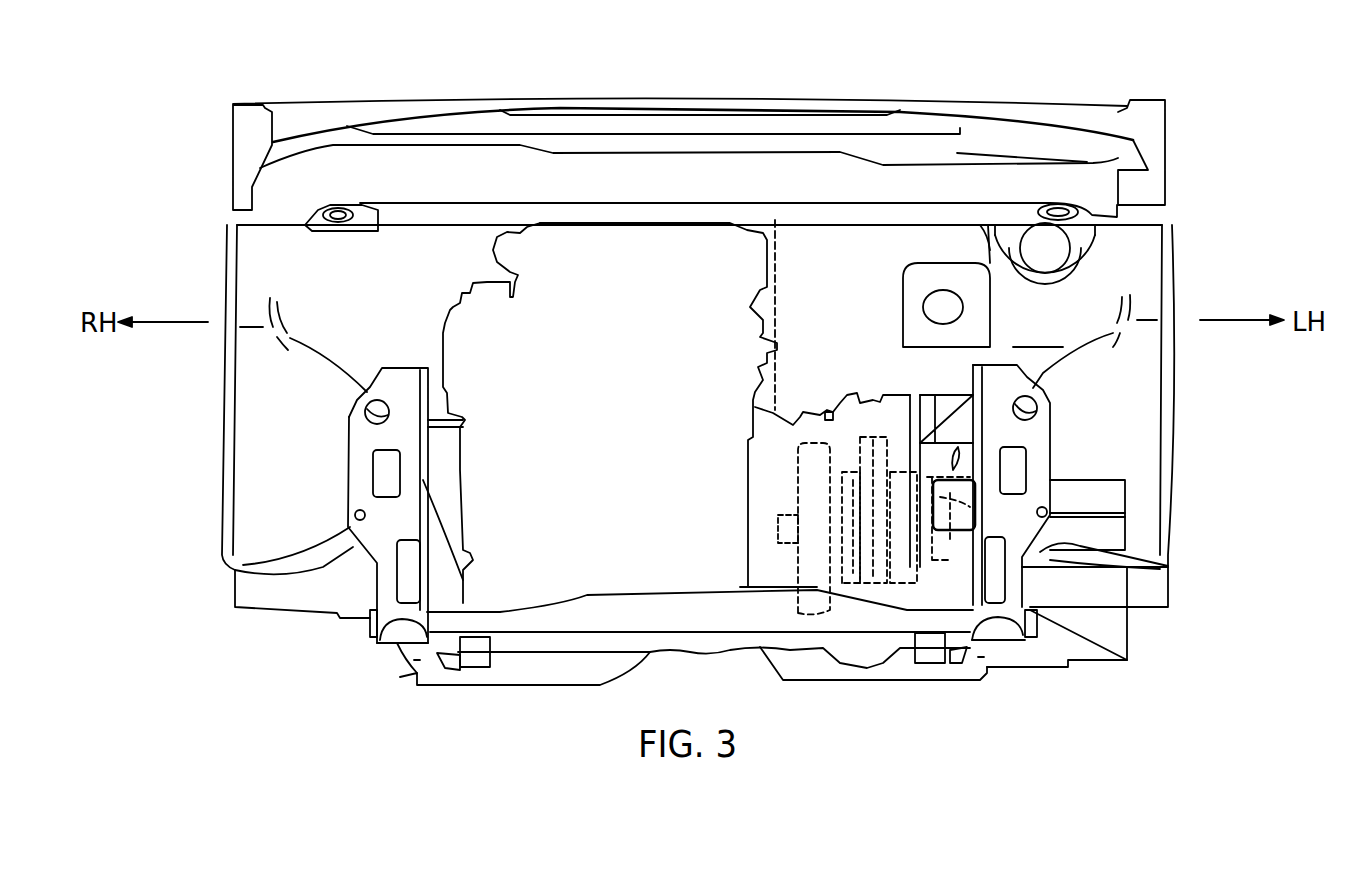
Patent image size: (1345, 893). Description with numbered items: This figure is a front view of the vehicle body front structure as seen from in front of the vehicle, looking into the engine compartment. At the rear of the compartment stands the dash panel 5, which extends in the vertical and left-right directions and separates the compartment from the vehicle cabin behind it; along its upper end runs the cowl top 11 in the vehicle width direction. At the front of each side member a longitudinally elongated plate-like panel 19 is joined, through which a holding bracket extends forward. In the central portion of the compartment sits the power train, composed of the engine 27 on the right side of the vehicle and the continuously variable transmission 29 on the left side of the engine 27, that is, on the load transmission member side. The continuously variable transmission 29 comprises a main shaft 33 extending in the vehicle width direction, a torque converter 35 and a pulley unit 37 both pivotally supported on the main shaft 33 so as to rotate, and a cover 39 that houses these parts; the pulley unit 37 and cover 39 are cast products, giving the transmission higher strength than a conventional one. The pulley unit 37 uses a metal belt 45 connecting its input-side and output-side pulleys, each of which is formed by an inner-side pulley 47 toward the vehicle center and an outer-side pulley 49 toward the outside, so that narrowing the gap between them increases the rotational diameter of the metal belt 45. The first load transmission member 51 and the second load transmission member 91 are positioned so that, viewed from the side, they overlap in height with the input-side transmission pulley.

The dash panel 5 is at (422, 233).
The cowl top 11 is at (667, 170).
The plate-like panel 19 is at (1043, 423).
The engine 27 is at (550, 570).
The continuously variable transmission 29 is at (825, 403).
The main shaft 33 is at (778, 530).
The torque converter 35 is at (814, 570).
The pulley unit 37 is at (877, 432).
The cover 39 is at (933, 403).
The metal belt 45 is at (875, 583).
The inner-side pulley 47 is at (850, 583).
The outer-side pulley 49 is at (905, 583).
The first load transmission member 51 is at (1113, 500).
The second load transmission member 91 is at (1107, 588).